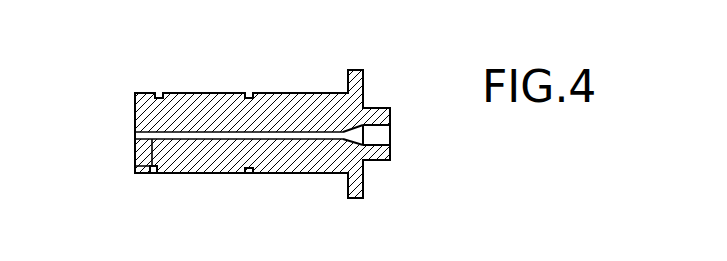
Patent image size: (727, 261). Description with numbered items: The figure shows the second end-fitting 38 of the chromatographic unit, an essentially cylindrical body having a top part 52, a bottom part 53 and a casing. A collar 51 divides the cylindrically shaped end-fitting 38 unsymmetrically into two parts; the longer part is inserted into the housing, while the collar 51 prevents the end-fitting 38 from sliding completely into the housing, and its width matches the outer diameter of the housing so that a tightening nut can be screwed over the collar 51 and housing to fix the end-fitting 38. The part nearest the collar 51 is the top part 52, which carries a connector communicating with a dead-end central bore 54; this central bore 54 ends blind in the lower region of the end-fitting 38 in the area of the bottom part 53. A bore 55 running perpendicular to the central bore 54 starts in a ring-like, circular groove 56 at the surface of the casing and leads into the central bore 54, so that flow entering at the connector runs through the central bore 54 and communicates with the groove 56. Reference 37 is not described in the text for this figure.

The upper body portion 37 is at (253, 93).
The second end-fitting 38 is at (272, 165).
The collar 51 is at (365, 70).
The top part 52 is at (382, 134).
The bottom part 53 is at (133, 140).
The dead-end central bore 54 is at (173, 133).
The bore 55 is at (134, 165).
The ring-like groove 56 is at (157, 95).